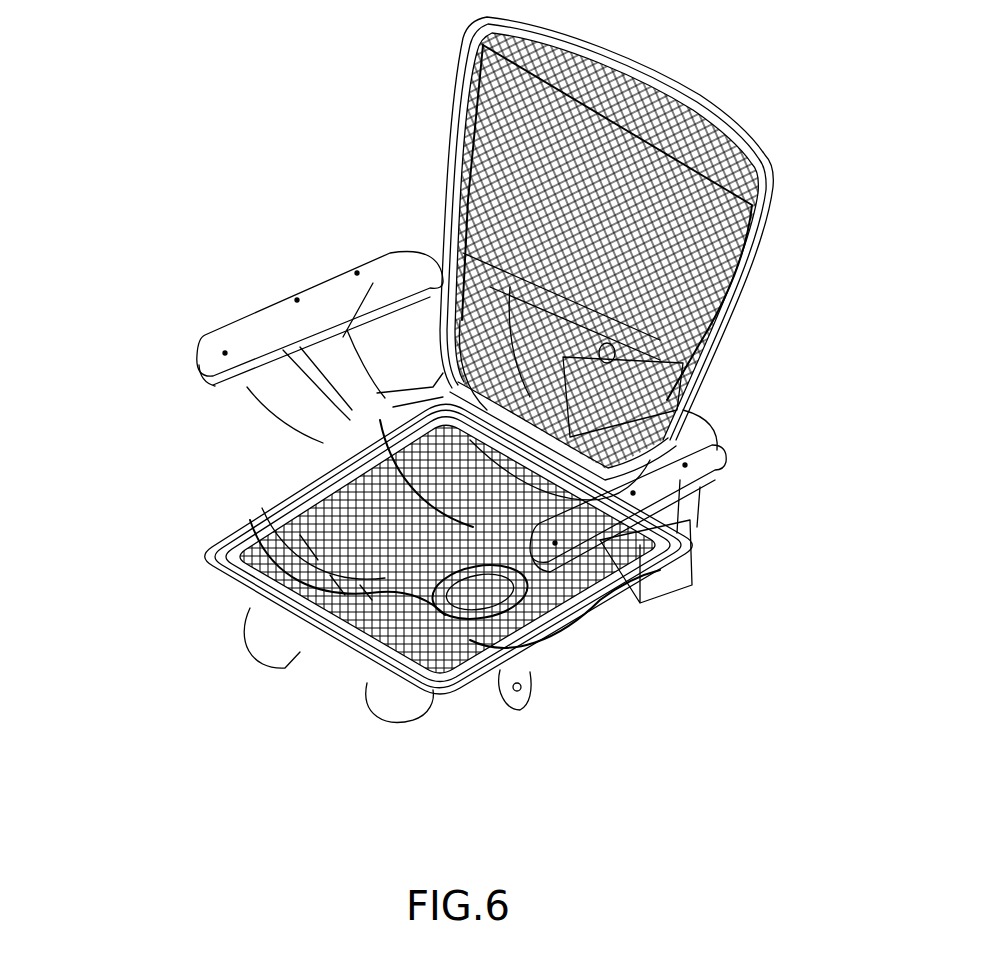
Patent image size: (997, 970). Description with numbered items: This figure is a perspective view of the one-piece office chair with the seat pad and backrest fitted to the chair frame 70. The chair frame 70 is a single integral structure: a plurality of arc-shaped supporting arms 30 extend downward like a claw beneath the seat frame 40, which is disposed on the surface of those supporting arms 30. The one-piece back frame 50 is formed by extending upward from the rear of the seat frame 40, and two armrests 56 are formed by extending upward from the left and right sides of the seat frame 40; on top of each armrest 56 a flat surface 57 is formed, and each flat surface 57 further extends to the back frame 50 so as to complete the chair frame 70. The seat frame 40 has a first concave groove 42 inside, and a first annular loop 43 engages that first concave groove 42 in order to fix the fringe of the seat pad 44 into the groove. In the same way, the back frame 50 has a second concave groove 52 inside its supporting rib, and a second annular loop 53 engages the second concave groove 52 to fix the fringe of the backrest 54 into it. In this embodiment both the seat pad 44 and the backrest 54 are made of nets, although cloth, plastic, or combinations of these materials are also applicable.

The one-piece chair frame 70 is at (215, 137).
The back frame 50 is at (767, 181).
The second concave groove 52 is at (549, 251).
The second annular loop 53 is at (467, 143).
The backrest 54 is at (633, 97).
The first concave groove 42 is at (383, 549).
The first annular loop 43 is at (210, 553).
The seat pad 44 is at (347, 503).
The seat frame 40 is at (280, 353).
The flat surface 57 is at (673, 470).
The armrest 56 is at (653, 520).
The supporting arm 30 is at (417, 720).